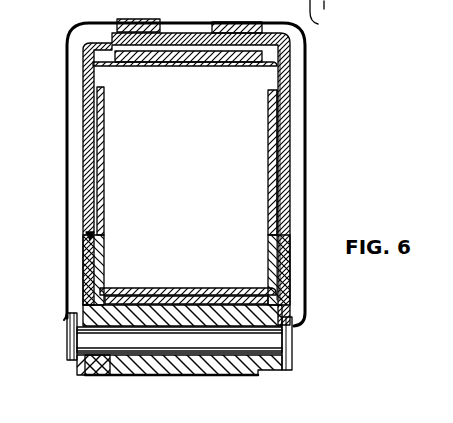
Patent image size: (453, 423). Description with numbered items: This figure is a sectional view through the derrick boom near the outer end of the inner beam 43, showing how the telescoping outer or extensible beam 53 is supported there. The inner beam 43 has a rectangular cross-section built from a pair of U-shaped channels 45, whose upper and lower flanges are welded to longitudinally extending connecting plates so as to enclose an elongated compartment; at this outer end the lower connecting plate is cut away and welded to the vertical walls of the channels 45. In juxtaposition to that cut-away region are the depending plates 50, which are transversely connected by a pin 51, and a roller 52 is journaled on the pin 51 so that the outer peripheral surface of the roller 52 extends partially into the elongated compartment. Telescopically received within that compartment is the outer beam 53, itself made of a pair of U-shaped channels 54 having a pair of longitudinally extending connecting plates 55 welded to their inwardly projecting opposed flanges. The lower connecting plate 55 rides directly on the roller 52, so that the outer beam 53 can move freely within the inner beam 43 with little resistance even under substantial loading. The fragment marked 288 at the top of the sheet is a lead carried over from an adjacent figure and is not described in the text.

The lead from adjacent figure 288 is at (328, 20).
The inner beam 43 is at (291, 88).
The U-shaped channels 45 is at (82, 190).
The outer or extensible beam 53 is at (279, 143).
The U-shaped channels 54 is at (104, 154).
The connecting plates 55 is at (186, 63).
The depending plates 50 is at (81, 307).
The pin 51 is at (276, 345).
The roller 52 is at (117, 375).